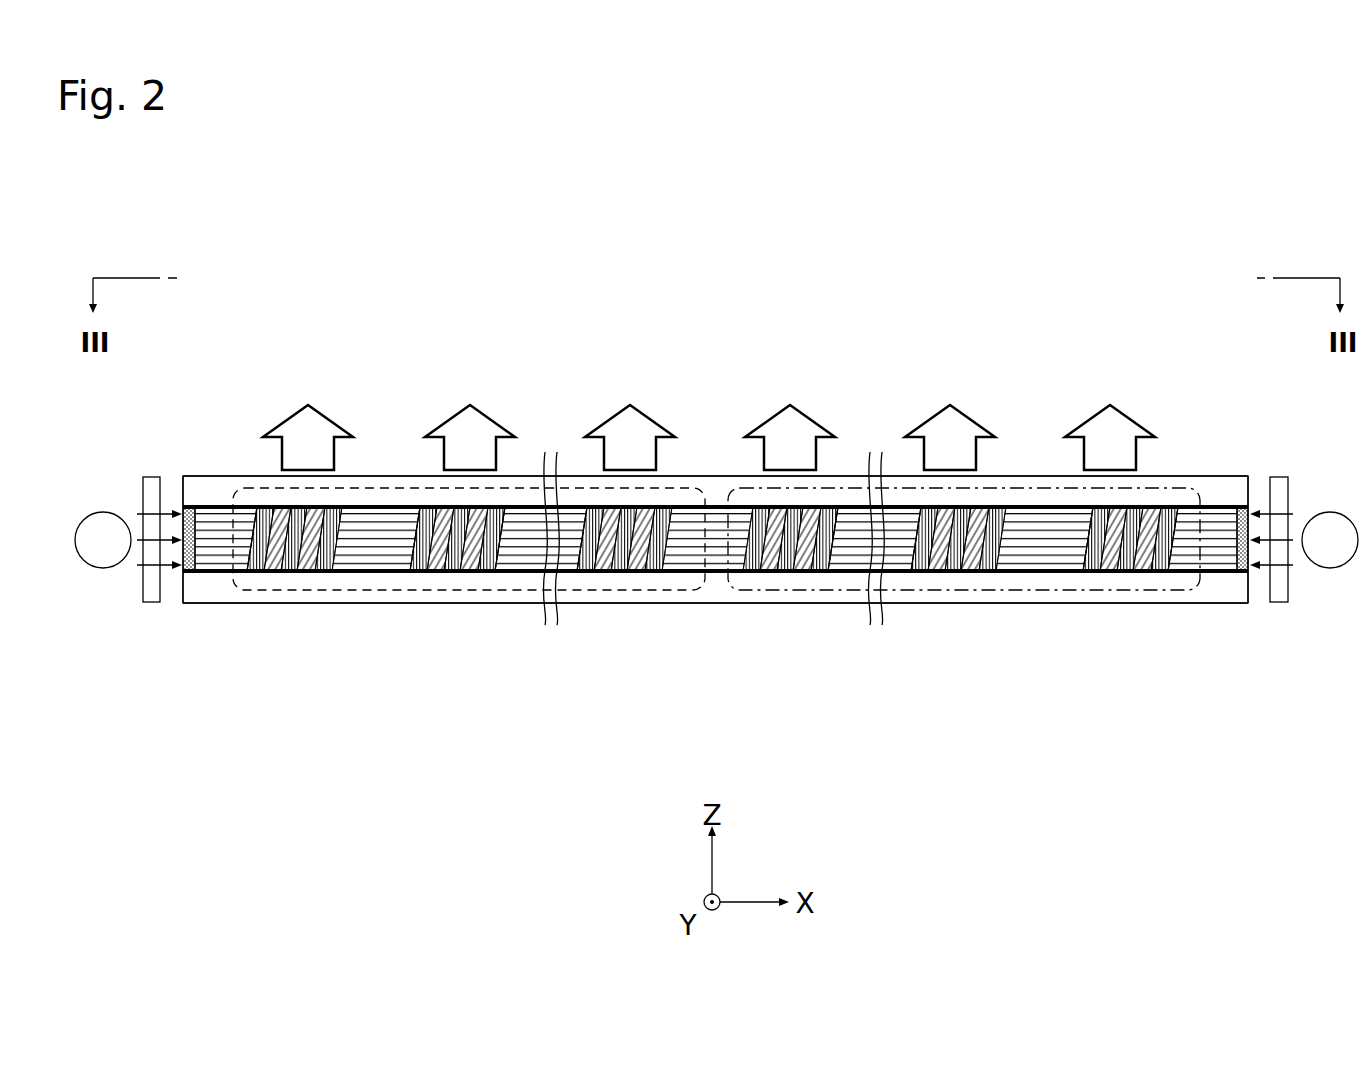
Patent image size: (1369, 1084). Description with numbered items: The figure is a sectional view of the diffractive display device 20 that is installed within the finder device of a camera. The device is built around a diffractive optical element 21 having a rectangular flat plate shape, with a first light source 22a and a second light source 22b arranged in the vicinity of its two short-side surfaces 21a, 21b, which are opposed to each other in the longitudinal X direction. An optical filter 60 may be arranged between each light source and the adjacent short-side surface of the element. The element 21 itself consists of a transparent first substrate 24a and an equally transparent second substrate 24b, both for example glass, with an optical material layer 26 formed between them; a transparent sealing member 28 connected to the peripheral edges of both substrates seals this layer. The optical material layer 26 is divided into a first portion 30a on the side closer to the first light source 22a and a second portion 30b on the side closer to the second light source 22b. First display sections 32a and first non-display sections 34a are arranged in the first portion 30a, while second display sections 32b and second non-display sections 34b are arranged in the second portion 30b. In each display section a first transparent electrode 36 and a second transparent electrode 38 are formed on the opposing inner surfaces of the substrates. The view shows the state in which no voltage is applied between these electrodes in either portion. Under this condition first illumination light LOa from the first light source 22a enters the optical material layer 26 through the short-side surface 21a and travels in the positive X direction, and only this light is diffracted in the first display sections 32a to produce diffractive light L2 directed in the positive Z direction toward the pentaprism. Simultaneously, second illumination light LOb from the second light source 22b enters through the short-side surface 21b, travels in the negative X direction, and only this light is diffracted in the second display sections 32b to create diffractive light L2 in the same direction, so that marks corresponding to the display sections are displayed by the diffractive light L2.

The diffractive display device 20 is at (300, 662).
The diffractive optical element 21 is at (718, 609).
The short-side surface 21a is at (178, 596).
The short-side surface 21b is at (1250, 582).
The first light source 22a is at (103, 527).
The second light source 22b is at (1330, 562).
The first substrate 24a is at (716, 492).
The second substrate 24b is at (690, 598).
The optical material layer 26 is at (212, 584).
The sealing member 28 is at (185, 506).
The first portion 30a is at (408, 598).
The second portion 30b is at (988, 596).
The first display section 32a is at (600, 574).
The second display section 32b is at (1115, 582).
The first non-display section 34a is at (367, 548).
The second non-display section 34b is at (1040, 533).
The first transparent electrode 36 is at (1147, 512).
The second transparent electrode 38 is at (1085, 574).
The optical filter 60 is at (148, 476).
The diffractive light L2 is at (322, 418).
The first illumination light LOa is at (143, 582).
The second illumination light LOb is at (1290, 500).